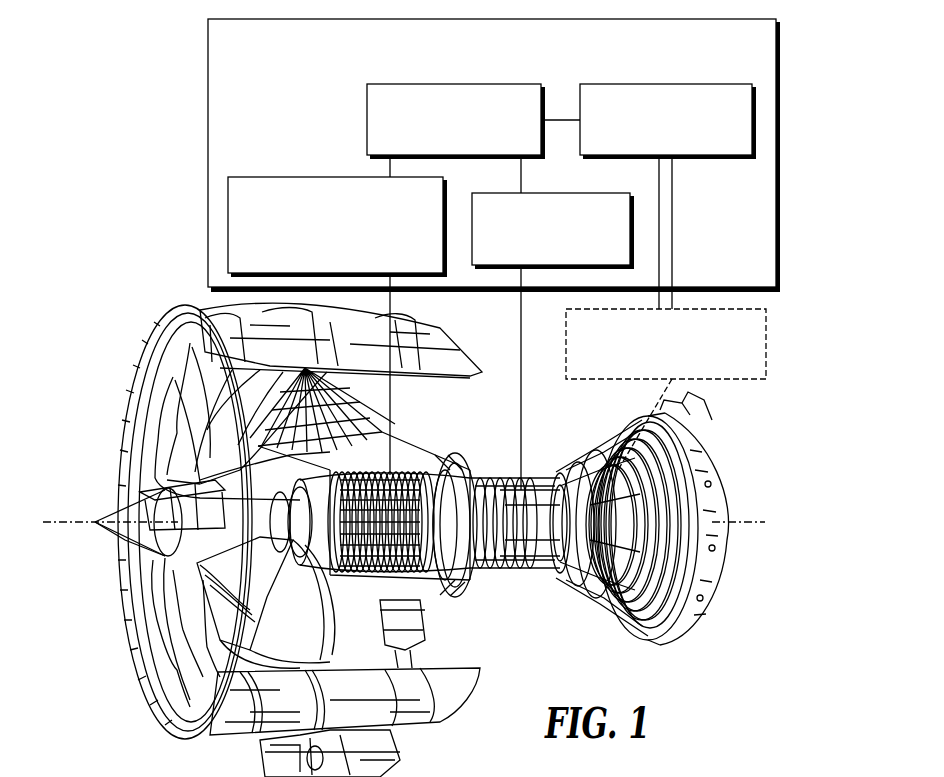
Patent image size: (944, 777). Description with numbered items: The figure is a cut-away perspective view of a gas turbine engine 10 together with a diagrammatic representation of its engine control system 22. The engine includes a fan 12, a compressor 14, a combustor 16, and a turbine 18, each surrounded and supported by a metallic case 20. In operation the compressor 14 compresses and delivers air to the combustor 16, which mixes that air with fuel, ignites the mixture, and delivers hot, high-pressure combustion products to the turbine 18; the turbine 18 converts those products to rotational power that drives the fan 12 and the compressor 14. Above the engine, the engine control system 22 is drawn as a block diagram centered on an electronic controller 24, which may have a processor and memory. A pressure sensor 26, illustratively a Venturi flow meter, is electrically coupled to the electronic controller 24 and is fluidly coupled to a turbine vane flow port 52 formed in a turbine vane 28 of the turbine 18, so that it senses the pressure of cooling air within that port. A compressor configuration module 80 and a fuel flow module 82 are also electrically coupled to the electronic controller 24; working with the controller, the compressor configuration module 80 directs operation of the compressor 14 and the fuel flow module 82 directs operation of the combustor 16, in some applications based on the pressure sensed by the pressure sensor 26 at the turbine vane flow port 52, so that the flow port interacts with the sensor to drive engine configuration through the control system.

The gas turbine engine 10 is at (131, 291).
The fan 12 is at (196, 326).
The compressor 14 is at (418, 492).
The combustor 16 is at (534, 522).
The turbine 18 is at (612, 450).
The metallic case 20 is at (594, 432).
The engine control system 22 is at (784, 63).
The electronic controller 24 is at (367, 110).
The pressure sensor 26 is at (700, 84).
The turbine vane 28 is at (834, 764).
The turbine vane flow port 52 is at (766, 350).
The compressor configuration module 80 is at (258, 177).
The fuel flow module 82 is at (605, 193).